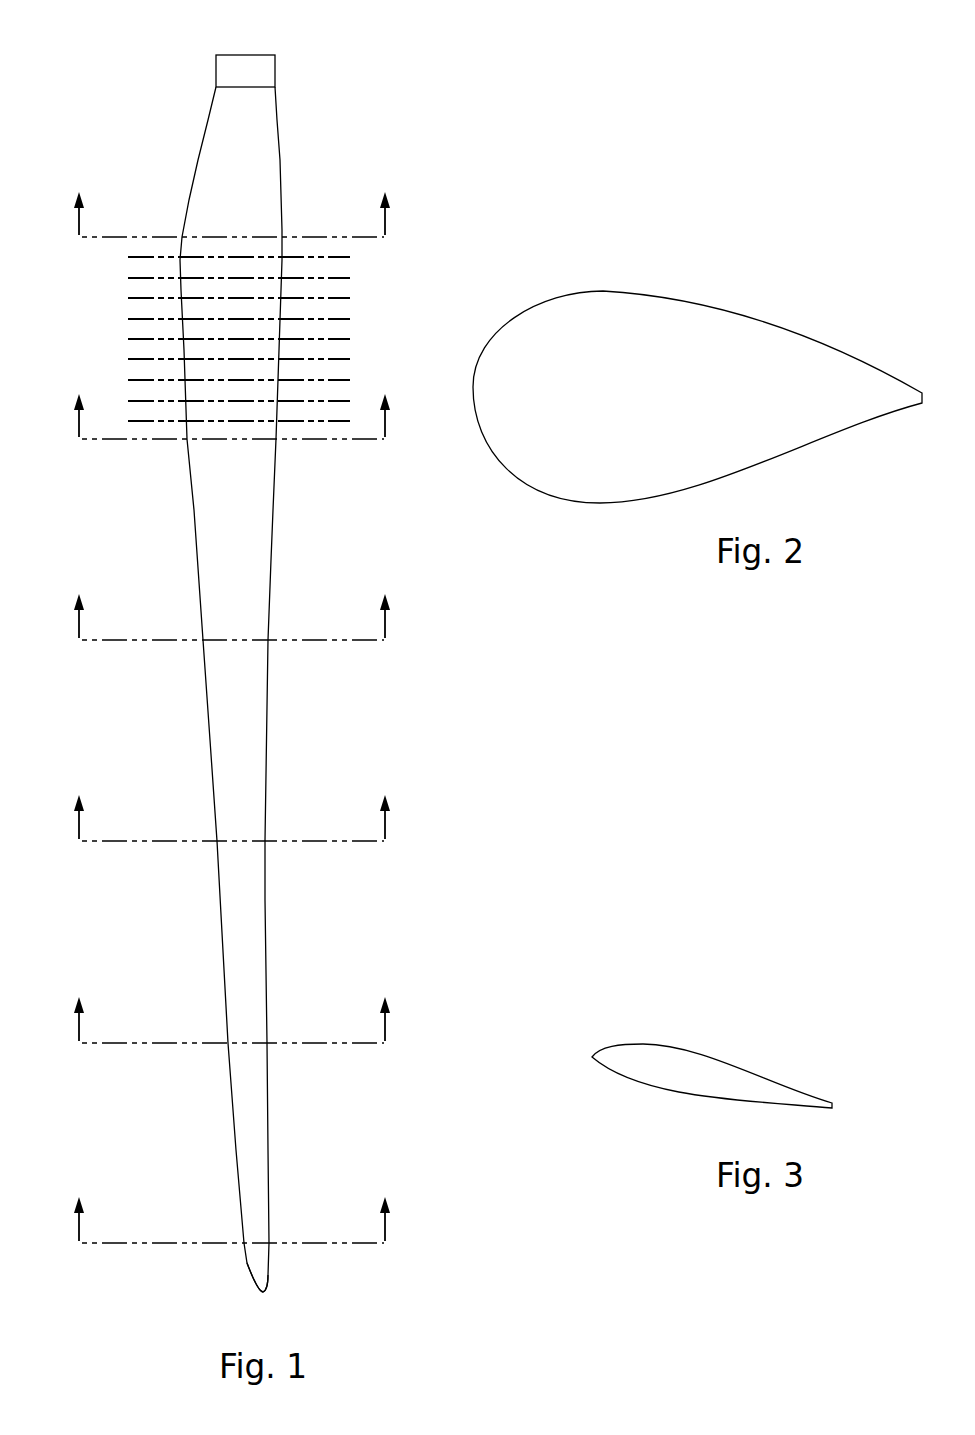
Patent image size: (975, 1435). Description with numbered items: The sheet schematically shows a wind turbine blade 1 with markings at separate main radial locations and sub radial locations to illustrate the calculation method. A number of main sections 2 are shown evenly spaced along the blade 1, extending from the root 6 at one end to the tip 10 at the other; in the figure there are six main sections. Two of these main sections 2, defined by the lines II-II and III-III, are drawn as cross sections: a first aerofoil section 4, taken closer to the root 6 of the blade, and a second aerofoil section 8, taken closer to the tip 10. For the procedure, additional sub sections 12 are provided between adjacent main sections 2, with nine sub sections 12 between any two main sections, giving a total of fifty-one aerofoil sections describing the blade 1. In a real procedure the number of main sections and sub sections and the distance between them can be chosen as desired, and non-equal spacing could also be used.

In FIG. 1, the wind turbine blade 1 is at (392, 105).
In FIG. 1, the main sections 2 is at (106, 232).
In FIG. 2, the first aerofoil section 4 is at (762, 323).
In FIG. 1, the root 6 is at (275, 87).
In FIG. 3, the second aerofoil section 8 is at (685, 1047).
In FIG. 1, the tip 10 is at (270, 1265).
In FIG. 1, the sub sections 12 is at (350, 333).